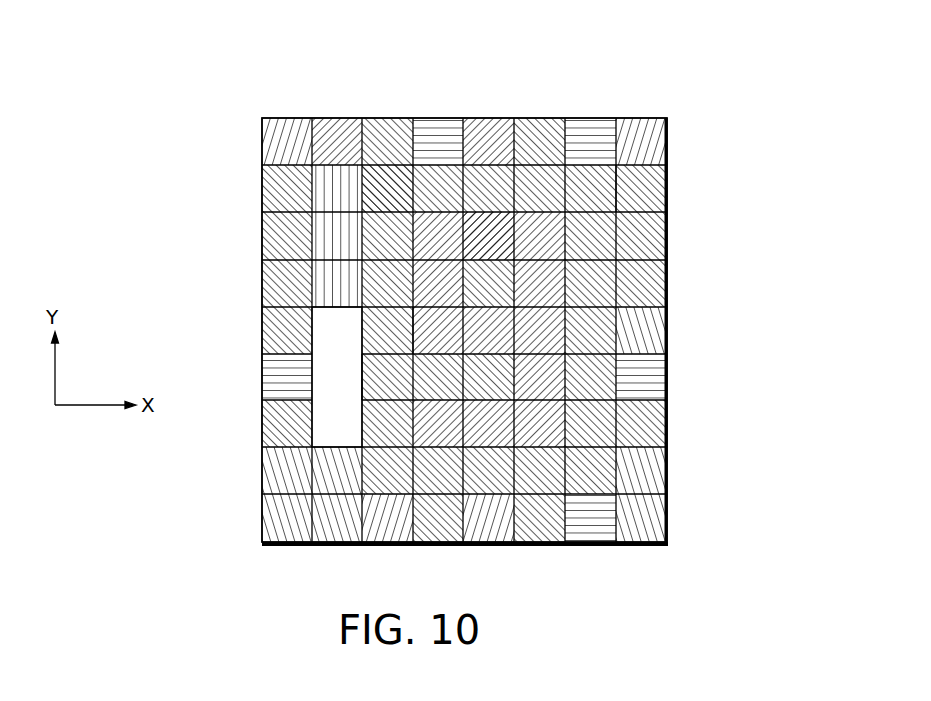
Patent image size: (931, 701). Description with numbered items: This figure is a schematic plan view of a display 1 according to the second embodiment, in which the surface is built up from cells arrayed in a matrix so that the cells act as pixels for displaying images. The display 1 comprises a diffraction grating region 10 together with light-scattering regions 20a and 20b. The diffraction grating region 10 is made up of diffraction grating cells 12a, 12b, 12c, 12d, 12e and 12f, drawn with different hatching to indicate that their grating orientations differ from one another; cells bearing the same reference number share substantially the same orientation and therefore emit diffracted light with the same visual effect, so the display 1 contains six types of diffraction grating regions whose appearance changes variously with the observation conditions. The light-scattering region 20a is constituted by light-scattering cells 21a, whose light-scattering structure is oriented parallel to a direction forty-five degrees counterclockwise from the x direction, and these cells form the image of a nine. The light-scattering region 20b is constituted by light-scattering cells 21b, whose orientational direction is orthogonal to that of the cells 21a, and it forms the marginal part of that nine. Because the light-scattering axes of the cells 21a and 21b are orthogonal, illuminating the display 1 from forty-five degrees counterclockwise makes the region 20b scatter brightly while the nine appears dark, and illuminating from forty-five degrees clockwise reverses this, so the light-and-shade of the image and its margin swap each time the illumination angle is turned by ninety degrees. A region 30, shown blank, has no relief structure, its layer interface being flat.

The display 1 is at (660, 104).
The diffraction grating region 10 is at (659, 131).
The diffraction grating cell 12a is at (268, 350).
The diffraction grating cell 12b is at (268, 192).
The diffraction grating cell 12c is at (268, 388).
The diffraction grating cell 12d is at (357, 128).
The diffraction grating cell 12e is at (268, 152).
The diffraction grating cell 12f is at (308, 246).
The light-scattering region 20a is at (480, 226).
The light-scattering region 20b is at (372, 186).
The light-scattering cell 21a is at (412, 324).
The light-scattering cell 21b is at (364, 370).
The region 30 is at (322, 438).